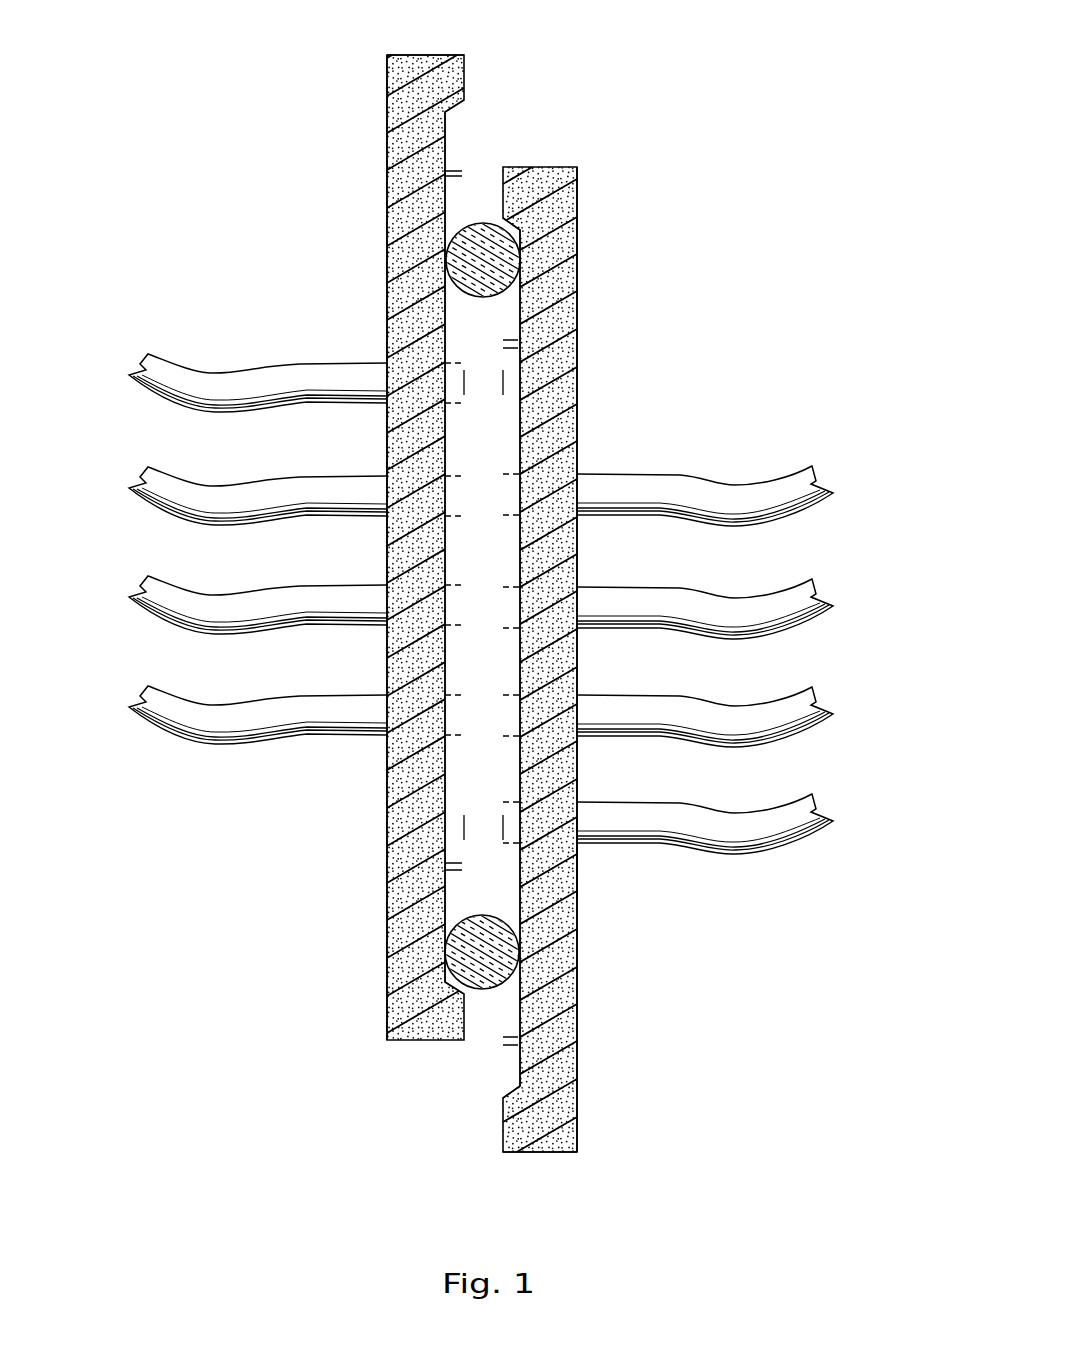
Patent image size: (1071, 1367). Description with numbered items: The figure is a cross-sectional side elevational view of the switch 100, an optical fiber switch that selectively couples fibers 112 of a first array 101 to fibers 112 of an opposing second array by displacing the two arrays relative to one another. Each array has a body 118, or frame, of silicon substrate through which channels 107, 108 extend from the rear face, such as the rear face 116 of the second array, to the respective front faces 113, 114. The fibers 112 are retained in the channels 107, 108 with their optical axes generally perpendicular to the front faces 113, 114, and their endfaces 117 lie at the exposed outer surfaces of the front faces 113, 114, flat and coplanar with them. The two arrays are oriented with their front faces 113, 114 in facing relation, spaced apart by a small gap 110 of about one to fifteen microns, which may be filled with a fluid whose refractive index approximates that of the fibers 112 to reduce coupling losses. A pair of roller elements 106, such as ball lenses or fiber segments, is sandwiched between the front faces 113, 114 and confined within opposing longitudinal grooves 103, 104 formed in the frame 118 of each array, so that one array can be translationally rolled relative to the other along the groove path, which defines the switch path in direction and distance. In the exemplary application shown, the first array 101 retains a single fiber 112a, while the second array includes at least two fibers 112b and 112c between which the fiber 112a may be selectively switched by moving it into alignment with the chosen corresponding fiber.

The switch 100 is at (659, 234).
The first array 101 is at (387, 88).
The groove 103 is at (459, 117).
The groove 104 is at (507, 1090).
The roller element 106 is at (485, 222).
The channel 107 is at (388, 748).
The channel 108 is at (577, 860).
The gap 110 is at (496, 180).
The fiber 112 is at (268, 370).
The selected fiber of the first array 112a is at (227, 598).
The selected corresponding fiber of the second array 112b is at (758, 597).
The fiber of the second array 112c is at (747, 703).
The front face 113 is at (465, 62).
The front face 114 is at (500, 1148).
The rear face 116 is at (577, 1058).
The endface 117 is at (465, 382).
The body 118 is at (558, 966).